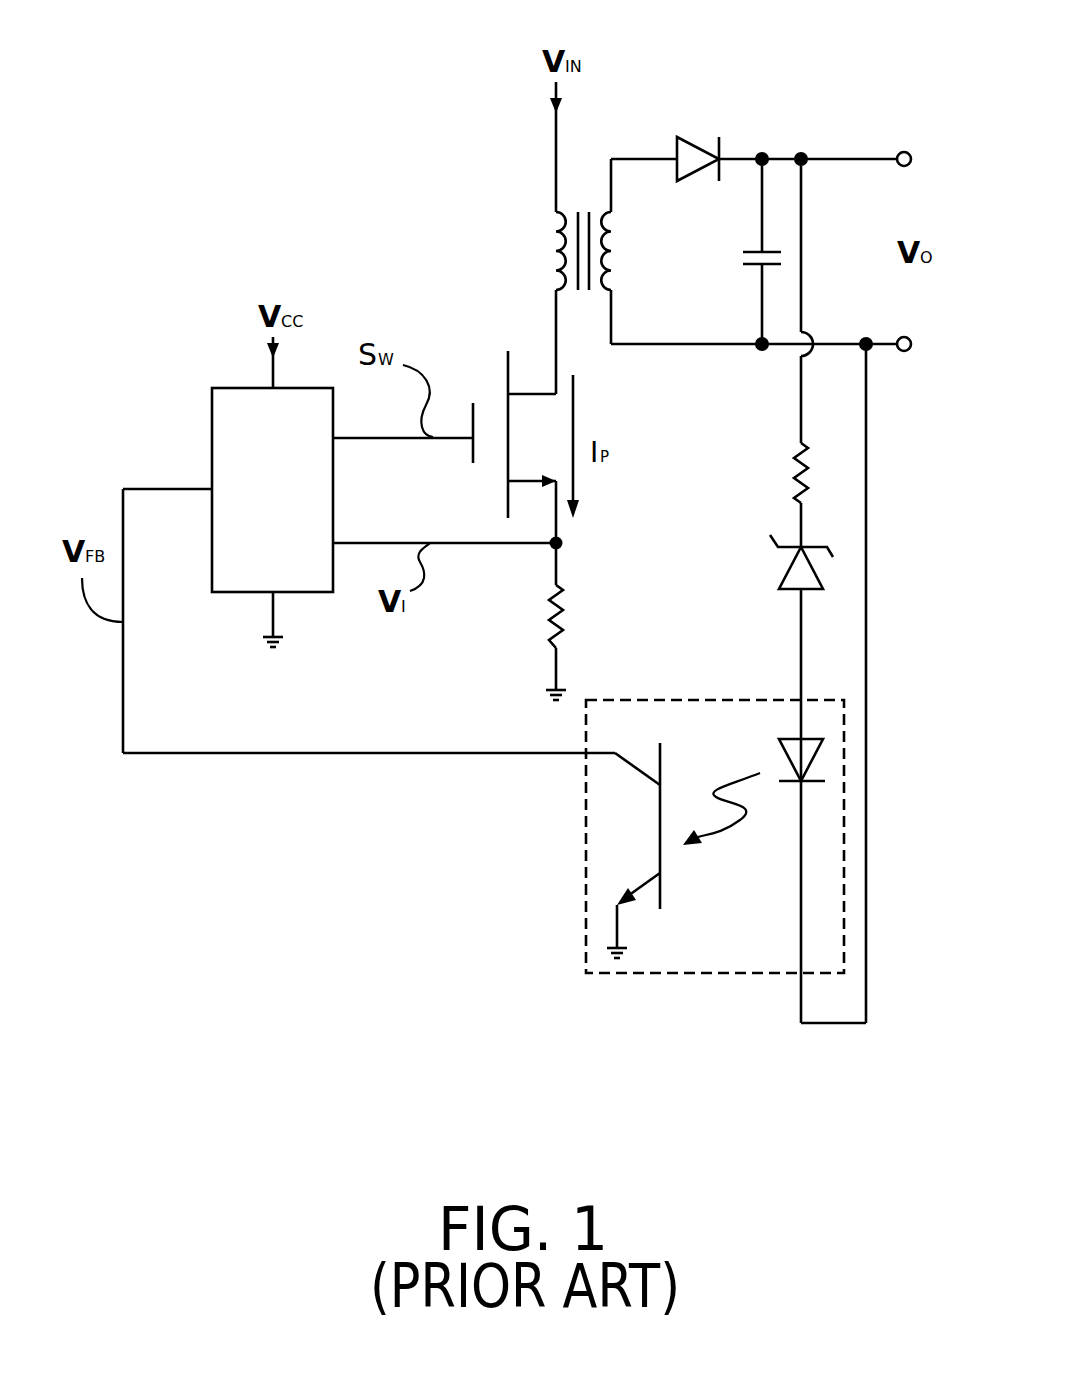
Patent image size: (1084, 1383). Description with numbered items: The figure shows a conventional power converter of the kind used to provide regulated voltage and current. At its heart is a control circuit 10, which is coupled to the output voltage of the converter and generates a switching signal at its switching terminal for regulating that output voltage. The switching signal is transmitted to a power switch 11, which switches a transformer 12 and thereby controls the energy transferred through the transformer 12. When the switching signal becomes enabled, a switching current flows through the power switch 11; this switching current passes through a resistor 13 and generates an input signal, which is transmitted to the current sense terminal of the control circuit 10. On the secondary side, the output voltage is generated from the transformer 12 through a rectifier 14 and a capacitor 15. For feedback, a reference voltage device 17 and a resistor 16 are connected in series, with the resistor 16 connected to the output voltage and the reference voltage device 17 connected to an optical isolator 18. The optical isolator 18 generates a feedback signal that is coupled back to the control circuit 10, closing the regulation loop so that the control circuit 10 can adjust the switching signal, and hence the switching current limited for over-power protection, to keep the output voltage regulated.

The control circuit 10 is at (226, 387).
The power switch 11 is at (470, 358).
The transformer 12 is at (584, 150).
The resistor 13 is at (543, 622).
The rectifier 14 is at (683, 140).
The capacitor 15 is at (718, 265).
The resistor 16 is at (787, 468).
The reference voltage device 17 is at (785, 573).
The optical isolator 18 is at (685, 700).